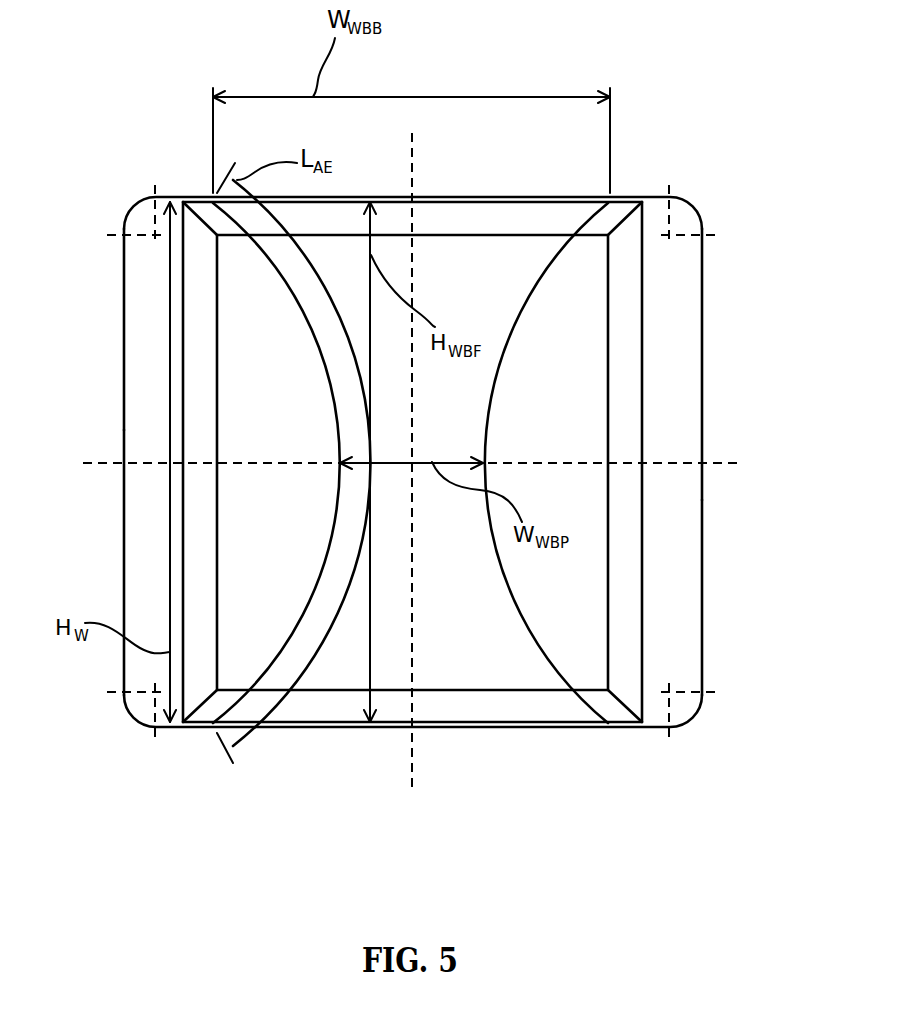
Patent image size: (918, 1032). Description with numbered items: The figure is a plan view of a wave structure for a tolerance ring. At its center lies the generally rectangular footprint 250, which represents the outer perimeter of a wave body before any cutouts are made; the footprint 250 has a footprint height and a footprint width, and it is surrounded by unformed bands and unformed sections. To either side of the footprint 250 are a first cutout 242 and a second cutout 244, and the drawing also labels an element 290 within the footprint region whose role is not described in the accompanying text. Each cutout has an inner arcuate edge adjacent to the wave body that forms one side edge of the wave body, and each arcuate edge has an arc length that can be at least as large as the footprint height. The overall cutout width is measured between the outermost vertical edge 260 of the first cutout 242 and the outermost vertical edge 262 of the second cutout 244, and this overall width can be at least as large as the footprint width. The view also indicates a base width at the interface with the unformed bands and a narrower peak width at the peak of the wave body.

The first cutout 242 is at (143, 335).
The second cutout 244 is at (687, 398).
The footprint 250 is at (642, 247).
The outermost vertical edge of the first cutout 260 is at (123, 452).
The outermost vertical edge of the second cutout 262 is at (701, 518).
The window frame with arcuate edges 290 is at (483, 253).